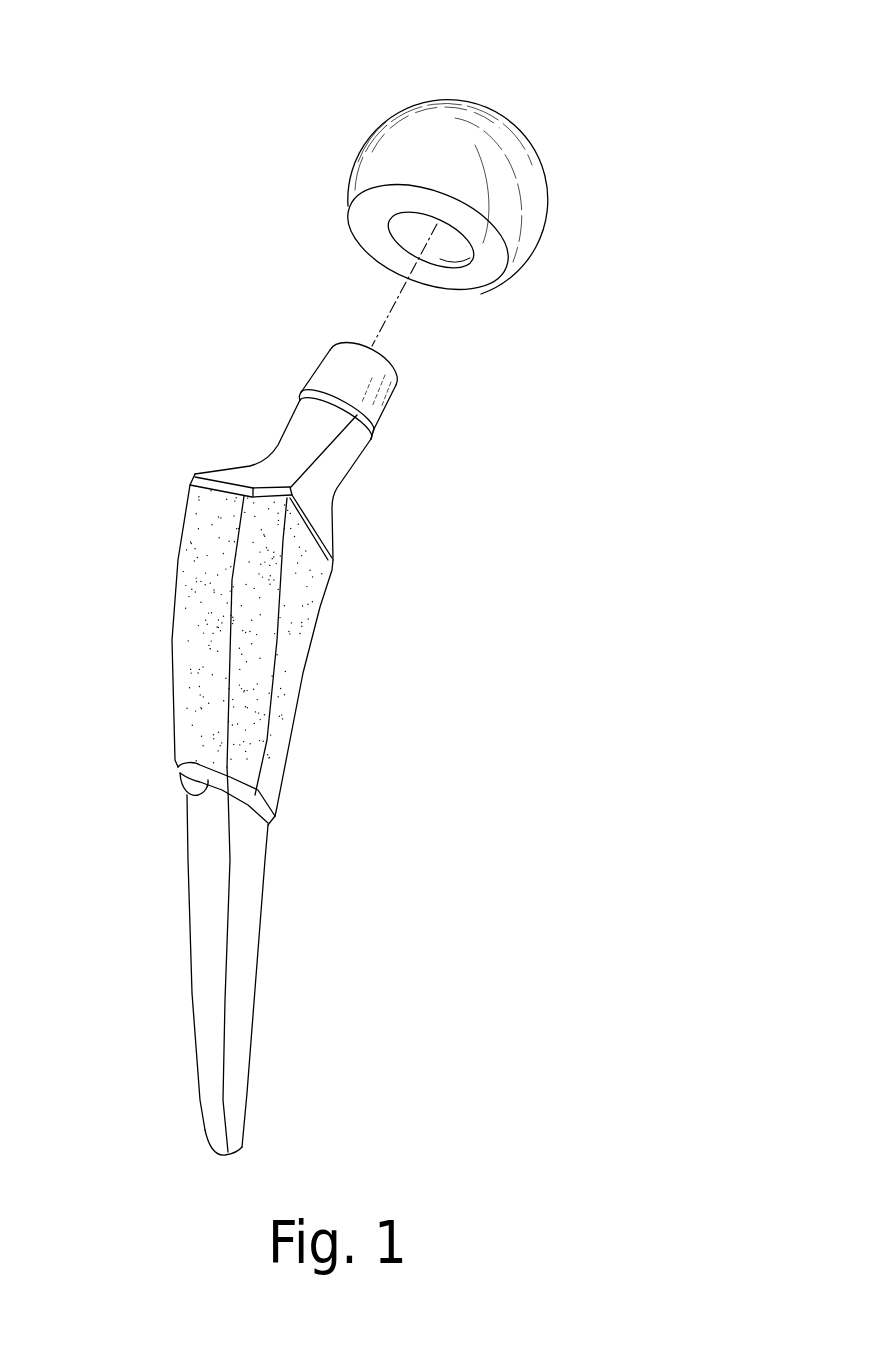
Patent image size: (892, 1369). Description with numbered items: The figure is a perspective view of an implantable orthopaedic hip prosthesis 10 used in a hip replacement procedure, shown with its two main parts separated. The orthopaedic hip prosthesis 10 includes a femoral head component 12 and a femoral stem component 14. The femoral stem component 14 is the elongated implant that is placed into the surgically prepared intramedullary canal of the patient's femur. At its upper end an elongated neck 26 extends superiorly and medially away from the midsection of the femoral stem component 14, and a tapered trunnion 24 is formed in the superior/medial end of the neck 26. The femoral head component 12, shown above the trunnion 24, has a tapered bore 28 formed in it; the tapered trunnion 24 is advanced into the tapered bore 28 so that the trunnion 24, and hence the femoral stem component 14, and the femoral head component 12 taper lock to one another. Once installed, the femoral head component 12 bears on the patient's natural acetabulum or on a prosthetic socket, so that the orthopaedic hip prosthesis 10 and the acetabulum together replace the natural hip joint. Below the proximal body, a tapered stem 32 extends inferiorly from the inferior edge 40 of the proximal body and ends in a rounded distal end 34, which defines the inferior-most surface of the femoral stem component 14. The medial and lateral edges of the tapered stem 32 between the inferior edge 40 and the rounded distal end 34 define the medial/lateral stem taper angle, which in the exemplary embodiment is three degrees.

The orthopaedic hip prosthesis 10 is at (588, 108).
The femoral head component 12 is at (532, 194).
The tapered bore 28 is at (461, 257).
The trunnion 24 is at (377, 398).
The elongated neck 26 is at (350, 449).
The femoral stem component 14 is at (325, 521).
The inferior edge 40 is at (182, 797).
The tapered stem 32 is at (240, 963).
The rounded distal end 34 is at (237, 1150).